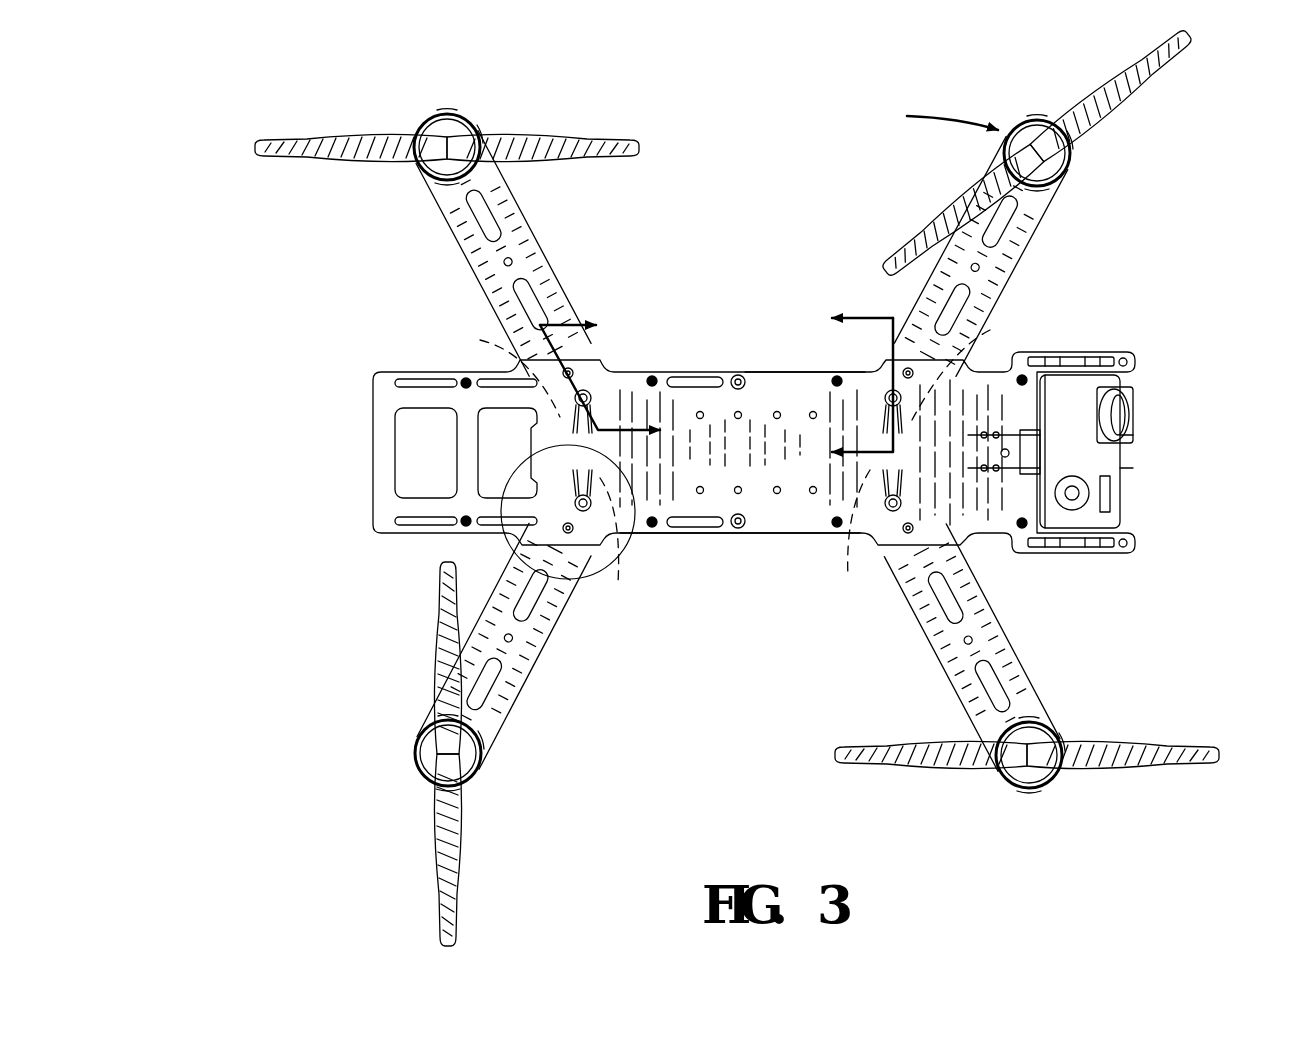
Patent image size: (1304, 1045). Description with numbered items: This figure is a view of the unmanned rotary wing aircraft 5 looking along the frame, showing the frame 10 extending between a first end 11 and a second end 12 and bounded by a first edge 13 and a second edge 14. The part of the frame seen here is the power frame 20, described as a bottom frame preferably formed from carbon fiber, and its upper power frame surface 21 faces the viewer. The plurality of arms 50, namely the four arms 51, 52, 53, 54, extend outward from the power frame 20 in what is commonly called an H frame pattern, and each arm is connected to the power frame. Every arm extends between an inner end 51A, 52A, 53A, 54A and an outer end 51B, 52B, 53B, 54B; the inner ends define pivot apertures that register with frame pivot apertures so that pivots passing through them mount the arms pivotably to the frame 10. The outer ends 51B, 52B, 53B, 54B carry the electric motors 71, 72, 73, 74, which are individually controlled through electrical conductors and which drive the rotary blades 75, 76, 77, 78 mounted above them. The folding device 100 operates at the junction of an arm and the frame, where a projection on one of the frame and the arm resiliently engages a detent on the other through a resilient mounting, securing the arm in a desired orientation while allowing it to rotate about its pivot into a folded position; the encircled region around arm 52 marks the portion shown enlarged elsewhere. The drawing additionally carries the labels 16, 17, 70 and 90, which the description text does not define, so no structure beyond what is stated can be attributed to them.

The rotary wing aircraft 5 is at (224, 304).
The frame 10 is at (378, 398).
The first end 11 is at (1135, 540).
The second end 12 is at (378, 512).
The first edge 13 is at (762, 533).
The second edge 14 is at (782, 372).
The section line 16- 16 is at (622, 380).
The section line 17- 17 is at (842, 388).
The power frame 20 is at (736, 372).
The upper power frame surface 21 is at (680, 372).
The plurality of arms 50 is at (591, 735).
The arm 51 is at (1005, 628).
The arm 52 is at (540, 641).
The arm 53 is at (1005, 268).
The arm 54 is at (463, 247).
The inner end 51A is at (850, 540).
The inner end 52A is at (618, 548).
The inner end 53A is at (990, 342).
The inner end 54A is at (505, 348).
The outer end 51B is at (1019, 795).
The outer end 52B is at (426, 790).
The outer end 53B is at (1047, 118).
The outer end 54B is at (432, 124).
The propulsion assembly 70 is at (549, 84).
The electric motor 71 is at (1050, 770).
The electric motor 72 is at (466, 765).
The electric motor 73 is at (1055, 162).
The electric motor 74 is at (432, 155).
The rotary blade 75 is at (925, 770).
The rotary blade 76 is at (440, 640).
The rotary blade 77 is at (1147, 82).
The rotary blade 78 is at (336, 142).
The camera 90 is at (1191, 482).
The folding device 100 is at (256, 626).